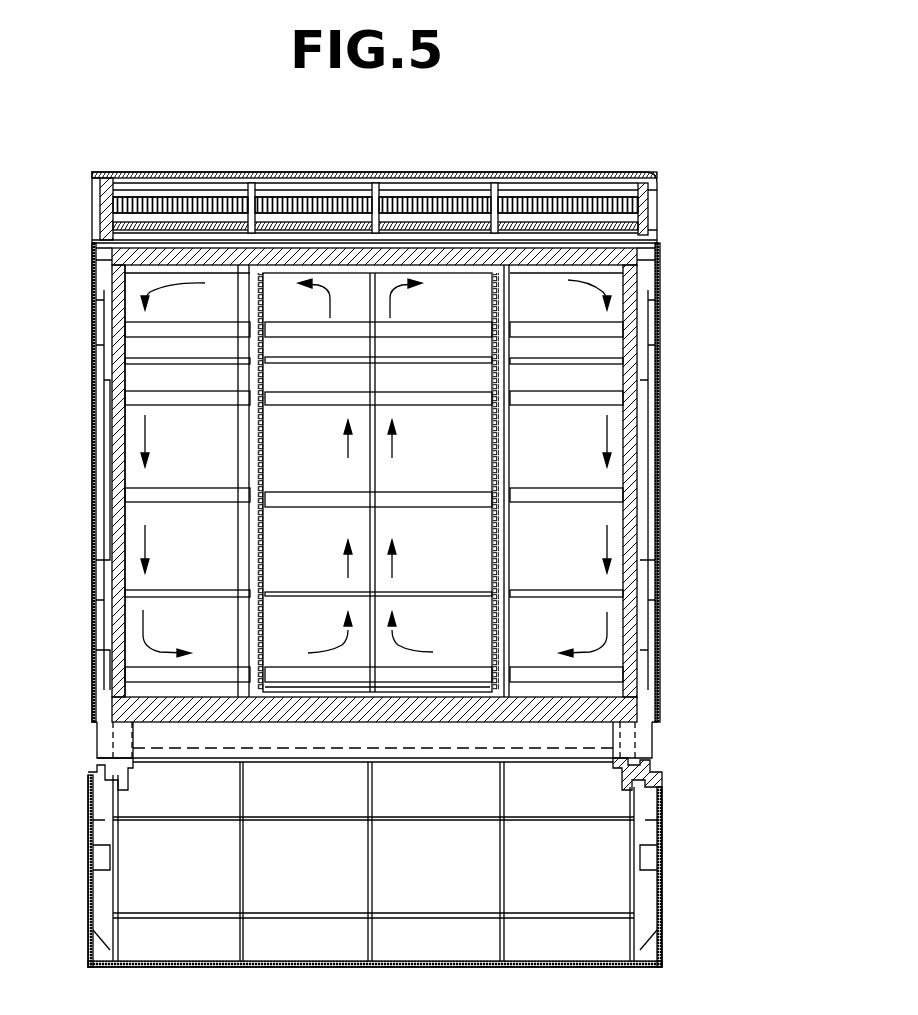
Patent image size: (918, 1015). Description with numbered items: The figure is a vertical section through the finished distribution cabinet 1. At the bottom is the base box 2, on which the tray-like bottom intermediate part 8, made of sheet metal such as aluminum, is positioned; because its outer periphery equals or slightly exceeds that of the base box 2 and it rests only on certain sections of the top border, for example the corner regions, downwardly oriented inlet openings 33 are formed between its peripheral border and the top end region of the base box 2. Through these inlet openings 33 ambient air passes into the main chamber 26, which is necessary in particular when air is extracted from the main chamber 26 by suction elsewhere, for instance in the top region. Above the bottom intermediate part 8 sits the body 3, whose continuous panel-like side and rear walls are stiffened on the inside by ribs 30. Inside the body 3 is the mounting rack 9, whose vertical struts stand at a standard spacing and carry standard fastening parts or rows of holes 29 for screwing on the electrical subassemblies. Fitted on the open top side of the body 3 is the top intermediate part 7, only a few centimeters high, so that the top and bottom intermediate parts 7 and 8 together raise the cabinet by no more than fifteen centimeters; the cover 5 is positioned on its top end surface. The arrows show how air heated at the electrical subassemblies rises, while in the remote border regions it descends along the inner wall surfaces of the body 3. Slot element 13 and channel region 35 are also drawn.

The distribution cabinet 1 is at (138, 148).
The base box 2 is at (672, 878).
The body 3 is at (680, 456).
The cover 5 is at (668, 178).
The top intermediate part 7 is at (668, 211).
The bottom intermediate part 8 is at (670, 740).
The mounting rack 9 is at (245, 440).
The ventilation fins 13 is at (545, 212).
The main chamber 26 is at (460, 445).
The rows of holes 29 is at (256, 541).
The ribs 30 is at (297, 362).
The inlet openings 33 is at (655, 768).
The side air channel 35 is at (540, 710).